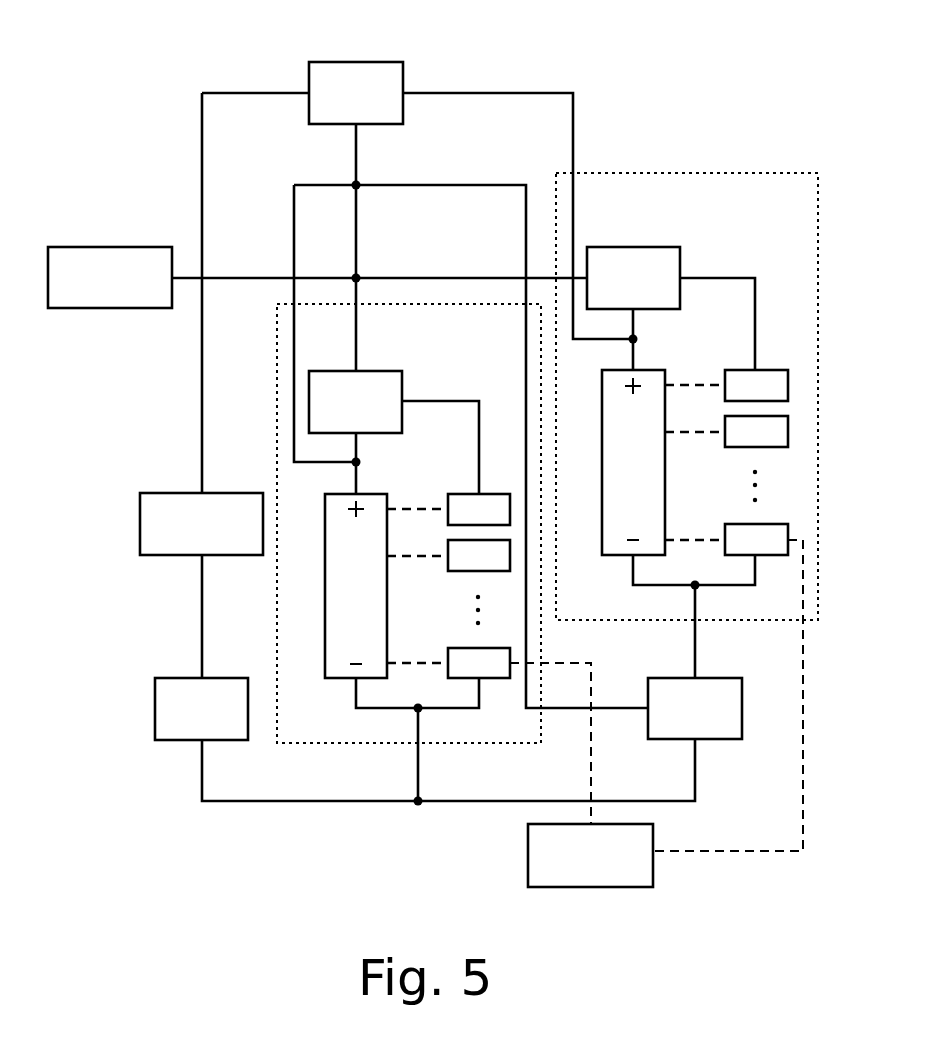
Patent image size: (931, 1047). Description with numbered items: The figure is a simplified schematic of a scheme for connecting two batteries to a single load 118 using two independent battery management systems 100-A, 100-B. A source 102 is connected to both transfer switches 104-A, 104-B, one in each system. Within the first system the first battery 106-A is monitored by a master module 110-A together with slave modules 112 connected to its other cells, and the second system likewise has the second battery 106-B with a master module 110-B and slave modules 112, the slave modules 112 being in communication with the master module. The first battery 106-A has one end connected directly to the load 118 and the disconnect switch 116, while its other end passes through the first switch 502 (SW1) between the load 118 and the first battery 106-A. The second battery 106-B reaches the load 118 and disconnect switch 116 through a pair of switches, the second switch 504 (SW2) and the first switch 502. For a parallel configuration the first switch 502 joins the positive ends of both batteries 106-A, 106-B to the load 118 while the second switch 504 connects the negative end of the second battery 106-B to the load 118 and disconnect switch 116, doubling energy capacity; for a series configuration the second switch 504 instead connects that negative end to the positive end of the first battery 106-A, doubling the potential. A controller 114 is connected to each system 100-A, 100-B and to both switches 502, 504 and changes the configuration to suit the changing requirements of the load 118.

The first switch 502 is at (342, 62).
The source 102 is at (125, 247).
The load 118 is at (172, 493).
The disconnect switch 116 is at (188, 678).
The controller 114 is at (528, 858).
The second switch 504 is at (725, 678).
The battery management system 100-A is at (440, 335).
The transfer switch 104-A is at (449, 376).
The first battery 106-A is at (345, 678).
The master module 110-A is at (465, 648).
The slave module 112 is at (465, 494).
The battery management system 100-B is at (793, 207).
The transfer switch 104-B is at (665, 247).
The second battery 106-B is at (620, 555).
The master module 110-B is at (743, 524).